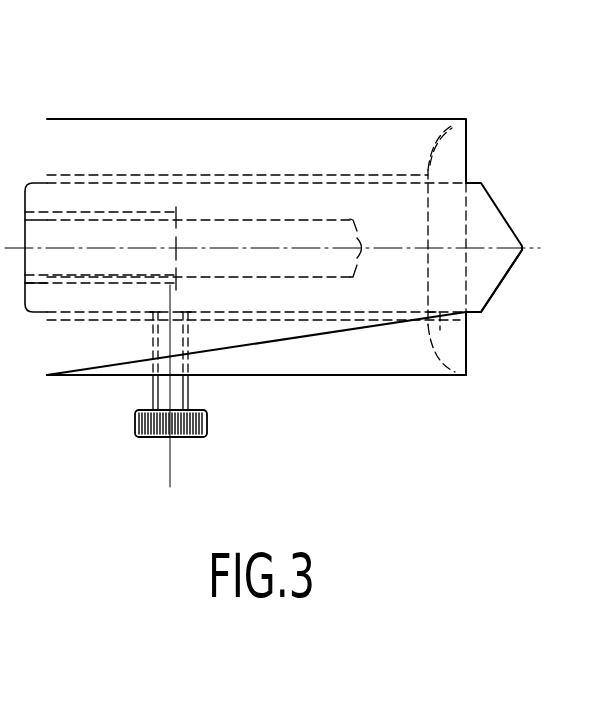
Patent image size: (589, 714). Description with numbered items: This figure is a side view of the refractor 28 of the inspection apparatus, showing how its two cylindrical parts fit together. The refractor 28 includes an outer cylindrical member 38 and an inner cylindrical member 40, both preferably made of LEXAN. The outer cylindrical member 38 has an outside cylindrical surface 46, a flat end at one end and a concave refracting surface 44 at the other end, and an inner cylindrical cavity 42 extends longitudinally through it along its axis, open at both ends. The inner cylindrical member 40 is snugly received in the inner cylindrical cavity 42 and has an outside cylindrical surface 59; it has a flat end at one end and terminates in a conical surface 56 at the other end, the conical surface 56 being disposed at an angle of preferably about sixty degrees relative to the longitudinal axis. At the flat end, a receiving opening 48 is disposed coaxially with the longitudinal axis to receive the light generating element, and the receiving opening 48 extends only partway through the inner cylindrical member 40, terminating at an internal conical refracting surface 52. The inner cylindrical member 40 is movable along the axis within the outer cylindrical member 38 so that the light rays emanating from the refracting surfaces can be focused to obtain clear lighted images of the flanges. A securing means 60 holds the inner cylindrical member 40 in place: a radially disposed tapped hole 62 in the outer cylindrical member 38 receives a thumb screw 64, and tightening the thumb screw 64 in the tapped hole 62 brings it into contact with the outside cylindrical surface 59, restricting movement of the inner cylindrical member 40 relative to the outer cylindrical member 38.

The refractor 28 is at (272, 90).
The outer cylindrical member 38 is at (327, 119).
The inner cylindrical member 40 is at (475, 183).
The inner cylindrical cavity 42 is at (178, 193).
The concave refracting surface 44 is at (470, 150).
The outside cylindrical surface 46 is at (320, 377).
The receiving opening 48 is at (293, 218).
The conical refracting surface 52 is at (360, 268).
The conical surface 56 is at (497, 292).
The outside cylindrical surface 59 is at (475, 348).
The securing means 60 is at (100, 401).
The tapped hole 62 is at (188, 323).
The thumb screw 64 is at (207, 425).